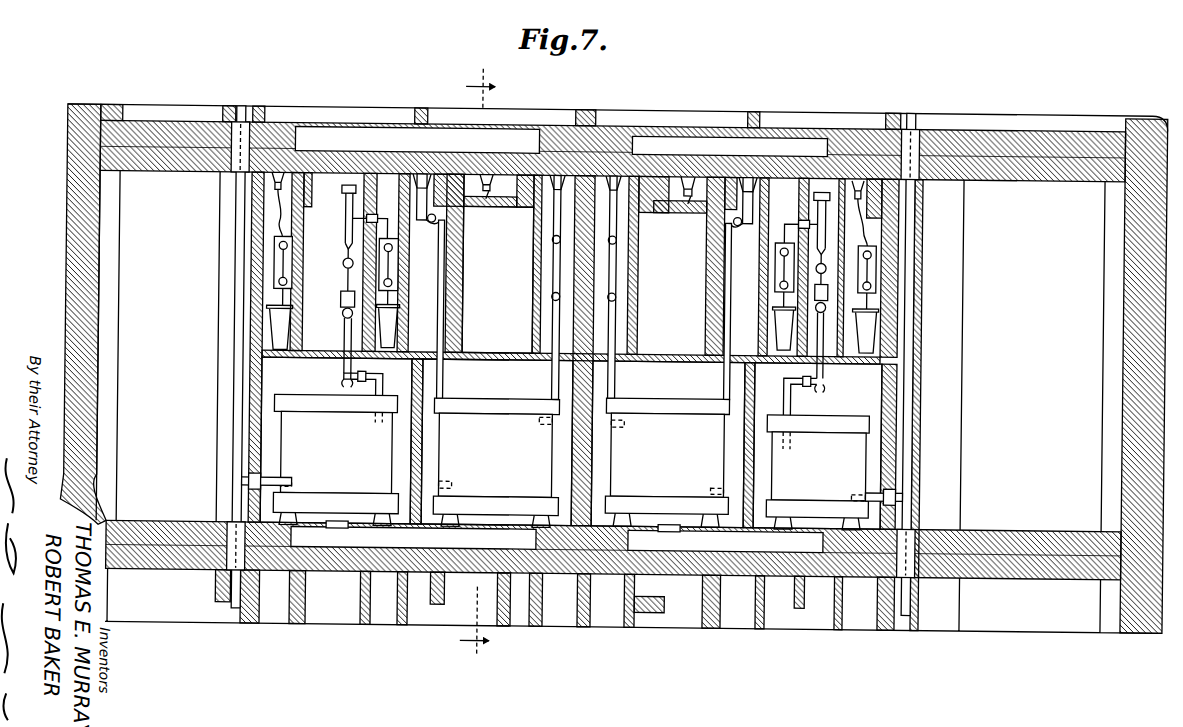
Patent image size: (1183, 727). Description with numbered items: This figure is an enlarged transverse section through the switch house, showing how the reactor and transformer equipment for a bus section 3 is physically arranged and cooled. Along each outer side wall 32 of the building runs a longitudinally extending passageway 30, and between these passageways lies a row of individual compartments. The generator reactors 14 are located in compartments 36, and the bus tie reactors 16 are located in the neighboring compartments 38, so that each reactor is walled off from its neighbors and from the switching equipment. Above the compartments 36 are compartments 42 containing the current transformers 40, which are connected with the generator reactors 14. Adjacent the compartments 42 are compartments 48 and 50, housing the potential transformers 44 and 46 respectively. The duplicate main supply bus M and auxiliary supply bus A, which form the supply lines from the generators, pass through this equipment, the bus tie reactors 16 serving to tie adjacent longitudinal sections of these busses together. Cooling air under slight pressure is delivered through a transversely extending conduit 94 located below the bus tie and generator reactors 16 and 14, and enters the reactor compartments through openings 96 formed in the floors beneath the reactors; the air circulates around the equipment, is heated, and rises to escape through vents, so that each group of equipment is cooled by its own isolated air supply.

The section 3 is at (488, 362).
The generator reactor 14 is at (571, 462).
The bus tie reactor 16 is at (581, 462).
The longitudinally extending passageway 30 is at (600, 350).
The outer side wall 32 is at (66, 262).
The compartment 36 is at (571, 443).
The compartment 38 is at (583, 443).
The current transformer 40 is at (341, 296).
The compartment 42 is at (571, 220).
The potential transformer 44 is at (272, 322).
The potential transformer 46 is at (396, 330).
The compartment 48 is at (265, 218).
The compartment 50 is at (400, 229).
The transversely extending conduit 94 is at (498, 506).
The opening 96 is at (336, 528).
The auxiliary supply bus A is at (686, 203).
The main supply bus M is at (484, 200).